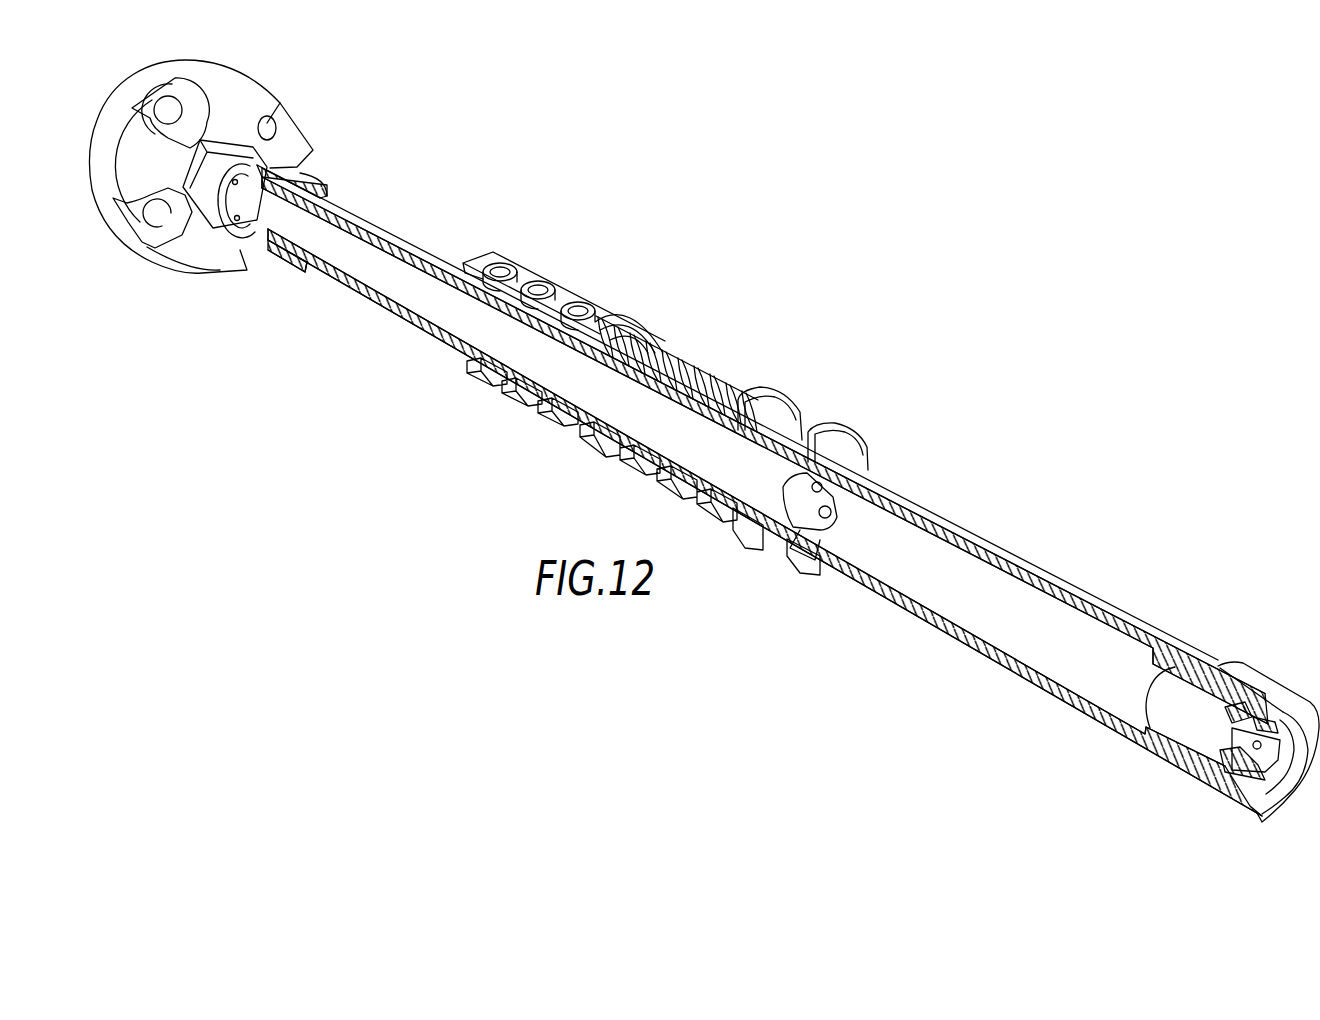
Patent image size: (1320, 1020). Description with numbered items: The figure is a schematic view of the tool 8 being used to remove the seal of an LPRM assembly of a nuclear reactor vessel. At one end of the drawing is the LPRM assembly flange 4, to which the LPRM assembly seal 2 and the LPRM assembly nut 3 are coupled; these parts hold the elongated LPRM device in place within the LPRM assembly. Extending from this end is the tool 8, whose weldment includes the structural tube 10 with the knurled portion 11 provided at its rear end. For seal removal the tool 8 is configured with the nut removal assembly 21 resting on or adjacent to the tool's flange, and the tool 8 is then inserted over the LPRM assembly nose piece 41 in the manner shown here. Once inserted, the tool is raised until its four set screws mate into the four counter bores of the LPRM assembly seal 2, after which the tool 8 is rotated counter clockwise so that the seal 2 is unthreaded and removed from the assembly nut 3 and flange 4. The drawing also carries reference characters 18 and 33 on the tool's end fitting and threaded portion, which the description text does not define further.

The LPRM assembly seal 2 is at (233, 213).
The LPRM assembly nut 3 is at (224, 147).
The LPRM assembly flange 4 is at (228, 96).
The tool 8 is at (511, 240).
The structural tube 10 is at (402, 236).
The knurled portion 11 is at (975, 540).
The end cap 18 is at (1262, 678).
The nut removal assembly 21 is at (571, 296).
The threaded portion 33 is at (320, 185).
The LPRM assembly nose piece 41 is at (469, 330).